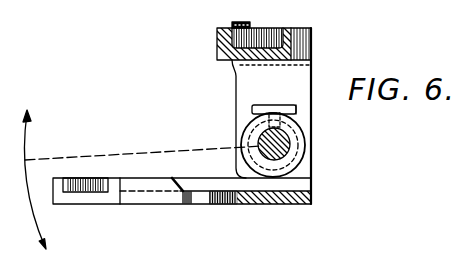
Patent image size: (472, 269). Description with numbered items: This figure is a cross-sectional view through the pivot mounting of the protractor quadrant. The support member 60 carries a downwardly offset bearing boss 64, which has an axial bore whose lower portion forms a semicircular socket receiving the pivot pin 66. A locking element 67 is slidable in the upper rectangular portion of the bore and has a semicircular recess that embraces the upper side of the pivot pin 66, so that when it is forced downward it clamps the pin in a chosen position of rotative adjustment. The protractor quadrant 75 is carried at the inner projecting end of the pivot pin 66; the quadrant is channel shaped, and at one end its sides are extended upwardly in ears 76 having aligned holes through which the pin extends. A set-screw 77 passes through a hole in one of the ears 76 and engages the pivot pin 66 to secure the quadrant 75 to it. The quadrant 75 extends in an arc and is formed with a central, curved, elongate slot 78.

The support member 60 is at (313, 34).
The bearing boss 64 is at (262, 96).
The pivot pin 66 is at (286, 156).
The locking element 67 is at (297, 113).
The protractor quadrant 75 is at (164, 206).
The ears 76 is at (250, 129).
The set-screw 77 is at (273, 104).
The elongate slot 78 is at (227, 203).